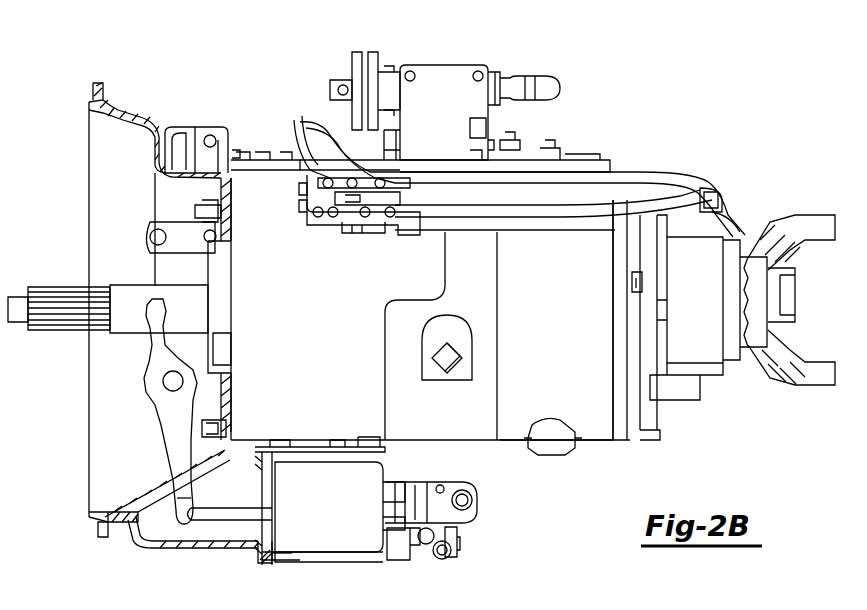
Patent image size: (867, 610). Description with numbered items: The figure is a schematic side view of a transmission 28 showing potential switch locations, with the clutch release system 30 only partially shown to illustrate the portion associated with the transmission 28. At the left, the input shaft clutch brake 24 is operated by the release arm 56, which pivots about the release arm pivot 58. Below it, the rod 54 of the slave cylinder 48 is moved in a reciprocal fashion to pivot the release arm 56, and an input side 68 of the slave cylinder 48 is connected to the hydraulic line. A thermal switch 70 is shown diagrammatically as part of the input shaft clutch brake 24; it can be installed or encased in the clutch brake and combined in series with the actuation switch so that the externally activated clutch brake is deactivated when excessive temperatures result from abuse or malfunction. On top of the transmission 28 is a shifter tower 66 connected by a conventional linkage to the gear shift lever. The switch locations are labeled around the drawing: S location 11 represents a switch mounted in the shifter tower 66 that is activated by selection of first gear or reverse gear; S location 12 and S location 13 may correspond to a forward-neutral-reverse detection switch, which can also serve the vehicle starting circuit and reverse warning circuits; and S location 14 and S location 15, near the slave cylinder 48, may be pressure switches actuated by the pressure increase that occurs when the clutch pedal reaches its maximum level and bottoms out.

The input shaft clutch brake 24 is at (229, 297).
The transmission 28 is at (604, 425).
The clutch release system 30 is at (128, 556).
The slave cylinder 48 is at (366, 474).
The rod 54 is at (228, 521).
The release arm 56 is at (173, 451).
The release arm pivot 58 is at (170, 386).
The shifter tower 66 is at (478, 131).
The input side 68 is at (457, 556).
The thermal switch 70 is at (229, 352).
The S location 11 is at (418, 65).
The S location 12 is at (458, 65).
The S location 13 is at (718, 186).
The S location 14 is at (477, 503).
The S location 15 is at (460, 544).